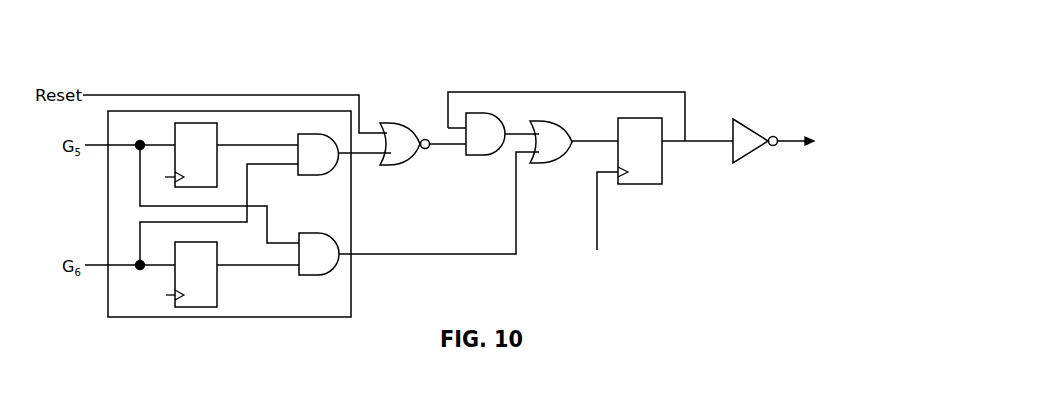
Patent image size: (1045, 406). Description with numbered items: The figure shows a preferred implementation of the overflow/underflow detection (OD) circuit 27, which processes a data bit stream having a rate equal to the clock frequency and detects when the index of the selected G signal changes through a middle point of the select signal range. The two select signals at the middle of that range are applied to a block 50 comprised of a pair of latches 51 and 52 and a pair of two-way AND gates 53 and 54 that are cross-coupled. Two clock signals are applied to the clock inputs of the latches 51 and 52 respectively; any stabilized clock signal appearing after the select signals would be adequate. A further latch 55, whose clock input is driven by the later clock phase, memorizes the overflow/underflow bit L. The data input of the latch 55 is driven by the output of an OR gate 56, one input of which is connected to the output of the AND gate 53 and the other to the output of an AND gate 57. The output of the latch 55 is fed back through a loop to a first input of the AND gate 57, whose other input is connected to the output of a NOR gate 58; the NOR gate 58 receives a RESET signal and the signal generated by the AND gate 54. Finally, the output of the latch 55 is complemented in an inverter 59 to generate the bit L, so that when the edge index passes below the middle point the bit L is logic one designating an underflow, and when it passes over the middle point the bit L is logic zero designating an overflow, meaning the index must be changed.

The overflow/underflow detection (OD) circuit 27 is at (710, 44).
The block 50 is at (352, 290).
The latch 51 is at (218, 133).
The latch 52 is at (218, 250).
The two-way AND gate 53 is at (323, 233).
The two-way AND gate 54 is at (327, 135).
The latch 55 is at (650, 117).
The OR gate 56 is at (562, 123).
The AND gate 57 is at (501, 118).
The NOR gate 58 is at (402, 122).
The inverter 59 is at (755, 145).